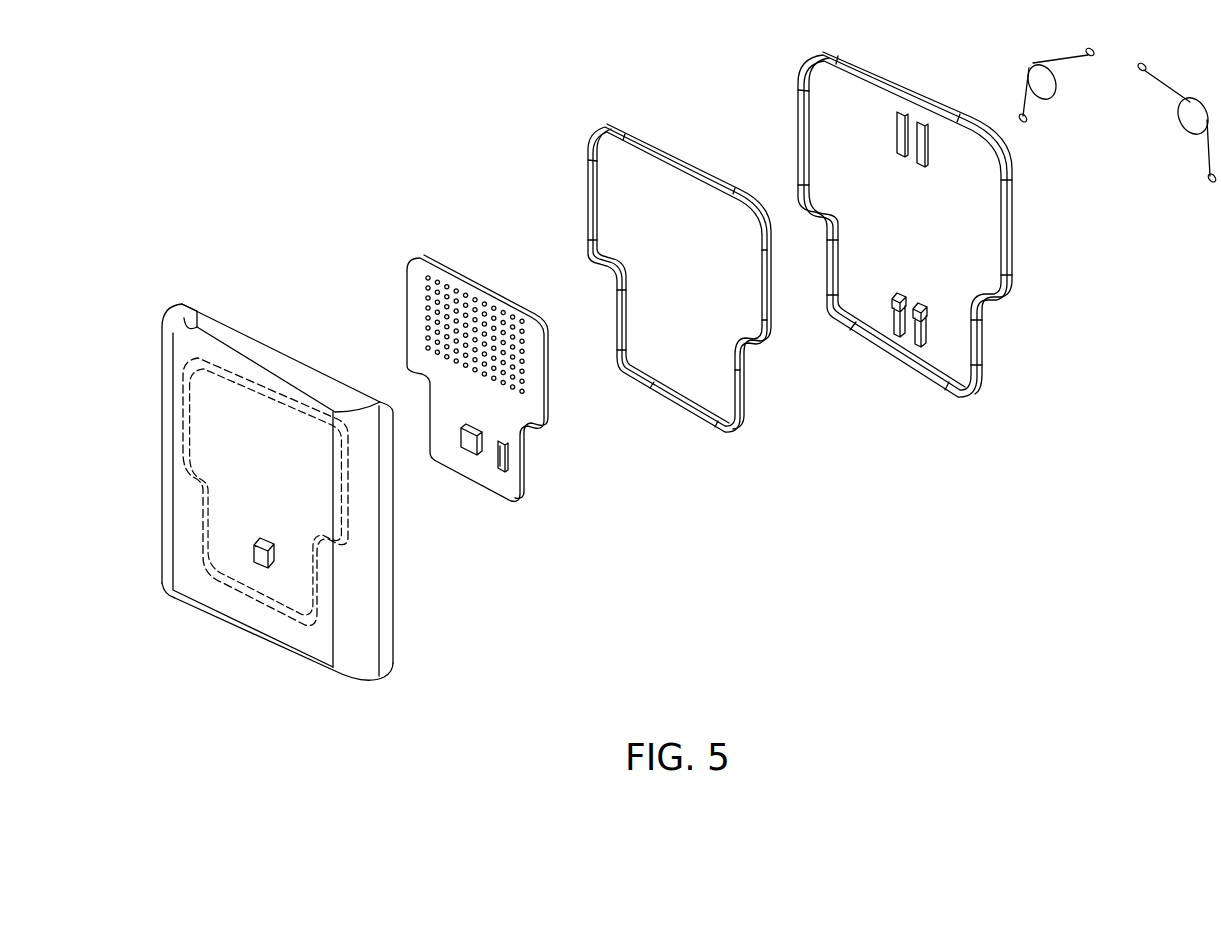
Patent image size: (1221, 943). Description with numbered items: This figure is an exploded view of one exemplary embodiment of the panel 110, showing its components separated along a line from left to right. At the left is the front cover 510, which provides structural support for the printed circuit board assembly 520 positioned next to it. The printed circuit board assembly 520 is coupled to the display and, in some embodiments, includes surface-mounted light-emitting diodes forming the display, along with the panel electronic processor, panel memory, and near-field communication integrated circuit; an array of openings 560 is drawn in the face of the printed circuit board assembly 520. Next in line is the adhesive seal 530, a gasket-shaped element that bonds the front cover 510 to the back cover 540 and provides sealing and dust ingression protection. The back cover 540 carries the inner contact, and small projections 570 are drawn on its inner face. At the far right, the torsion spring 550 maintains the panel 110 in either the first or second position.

The panel 110 is at (266, 160).
The front cover 510 is at (286, 342).
The printed circuit board assembly 520 is at (494, 258).
The adhesive seal 530 is at (695, 131).
The back cover 540 is at (926, 60).
The torsion spring 550 is at (1119, 49).
The holes 560 is at (536, 384).
The posts 570 is at (936, 332).